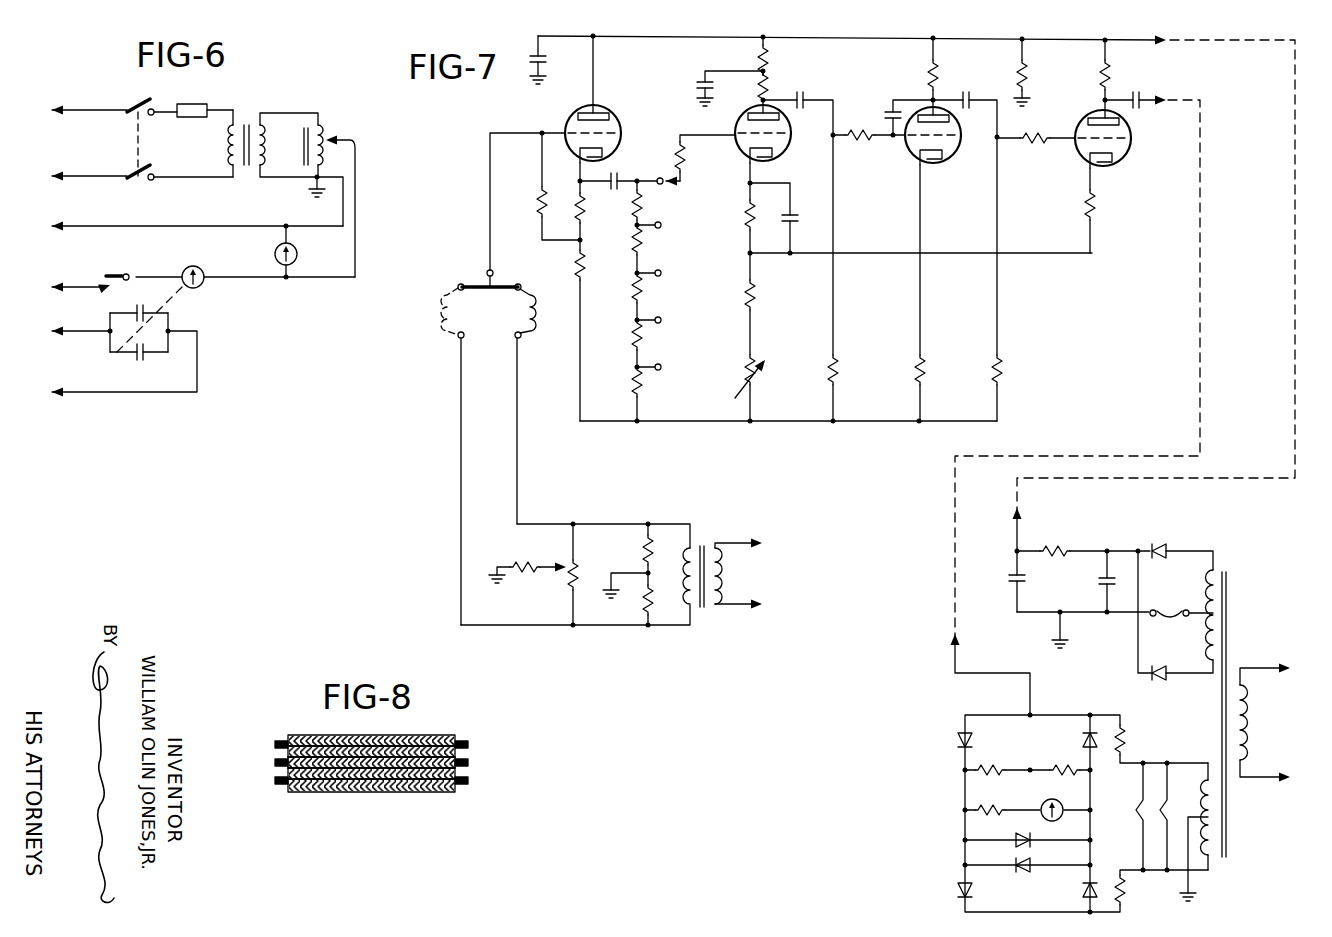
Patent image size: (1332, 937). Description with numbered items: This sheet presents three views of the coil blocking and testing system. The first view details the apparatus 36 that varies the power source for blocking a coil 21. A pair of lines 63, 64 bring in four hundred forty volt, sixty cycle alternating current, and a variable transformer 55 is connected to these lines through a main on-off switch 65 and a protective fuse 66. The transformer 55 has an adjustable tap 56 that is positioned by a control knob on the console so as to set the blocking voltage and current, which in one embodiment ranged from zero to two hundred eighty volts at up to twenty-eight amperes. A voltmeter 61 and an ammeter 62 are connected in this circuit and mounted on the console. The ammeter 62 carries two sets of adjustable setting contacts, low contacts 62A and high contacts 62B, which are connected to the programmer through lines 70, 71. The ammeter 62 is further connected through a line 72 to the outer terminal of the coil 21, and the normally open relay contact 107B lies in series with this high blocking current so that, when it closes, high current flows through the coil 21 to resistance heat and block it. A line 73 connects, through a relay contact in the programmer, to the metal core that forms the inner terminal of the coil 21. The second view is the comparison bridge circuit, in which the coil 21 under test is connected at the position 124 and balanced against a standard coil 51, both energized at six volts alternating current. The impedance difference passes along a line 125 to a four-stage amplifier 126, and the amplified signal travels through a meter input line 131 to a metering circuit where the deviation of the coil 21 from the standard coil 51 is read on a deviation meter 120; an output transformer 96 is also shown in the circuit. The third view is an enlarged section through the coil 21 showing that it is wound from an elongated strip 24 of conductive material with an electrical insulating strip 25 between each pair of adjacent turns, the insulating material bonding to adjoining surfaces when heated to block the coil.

In FIG. 6, the line 63 is at (77, 108).
In FIG. 6, the line 64 is at (86, 175).
In FIG. 6, the main on-off switch 65 is at (135, 99).
In FIG. 6, the protective fuse 66 is at (192, 118).
In FIG. 6, the variable transformer 55 is at (275, 104).
In FIG. 6, the adjustable tap 56 is at (357, 163).
In FIG. 6, the line 73 is at (82, 226).
In FIG. 6, the line 72 is at (133, 273).
In FIG. 6, the ammeter 62 is at (185, 267).
In FIG. 6, the voltmeter 61 is at (296, 254).
In FIG. 6, the relay contact 107B is at (67, 276).
In FIG. 6, the low ammeter contacts 62A is at (133, 313).
In FIG. 6, the high ammeter contacts 62B is at (169, 373).
In FIG. 6, the line 70 is at (80, 333).
In FIG. 6, the line 71 is at (78, 393).
In FIG. 6, the apparatus 36 is at (281, 320).
In FIG. 7, the four-stage amplifier 126 is at (540, 107).
In FIG. 7, the line 125 is at (490, 186).
In FIG. 7, the coil connection position 124 is at (433, 294).
In FIG. 7, the coil 21 is at (442, 325).
In FIG. 7, the standard coil 51 is at (538, 324).
In FIG. 7, the meter input line 131 is at (1200, 380).
In FIG. 7, the output transformer 96 is at (790, 587).
In FIG. 7, the deviation meter 120 is at (1048, 798).
In FIG. 8, the elongated strip 24 is at (438, 752).
In FIG. 8, the electrical insulating strip 25 is at (470, 760).